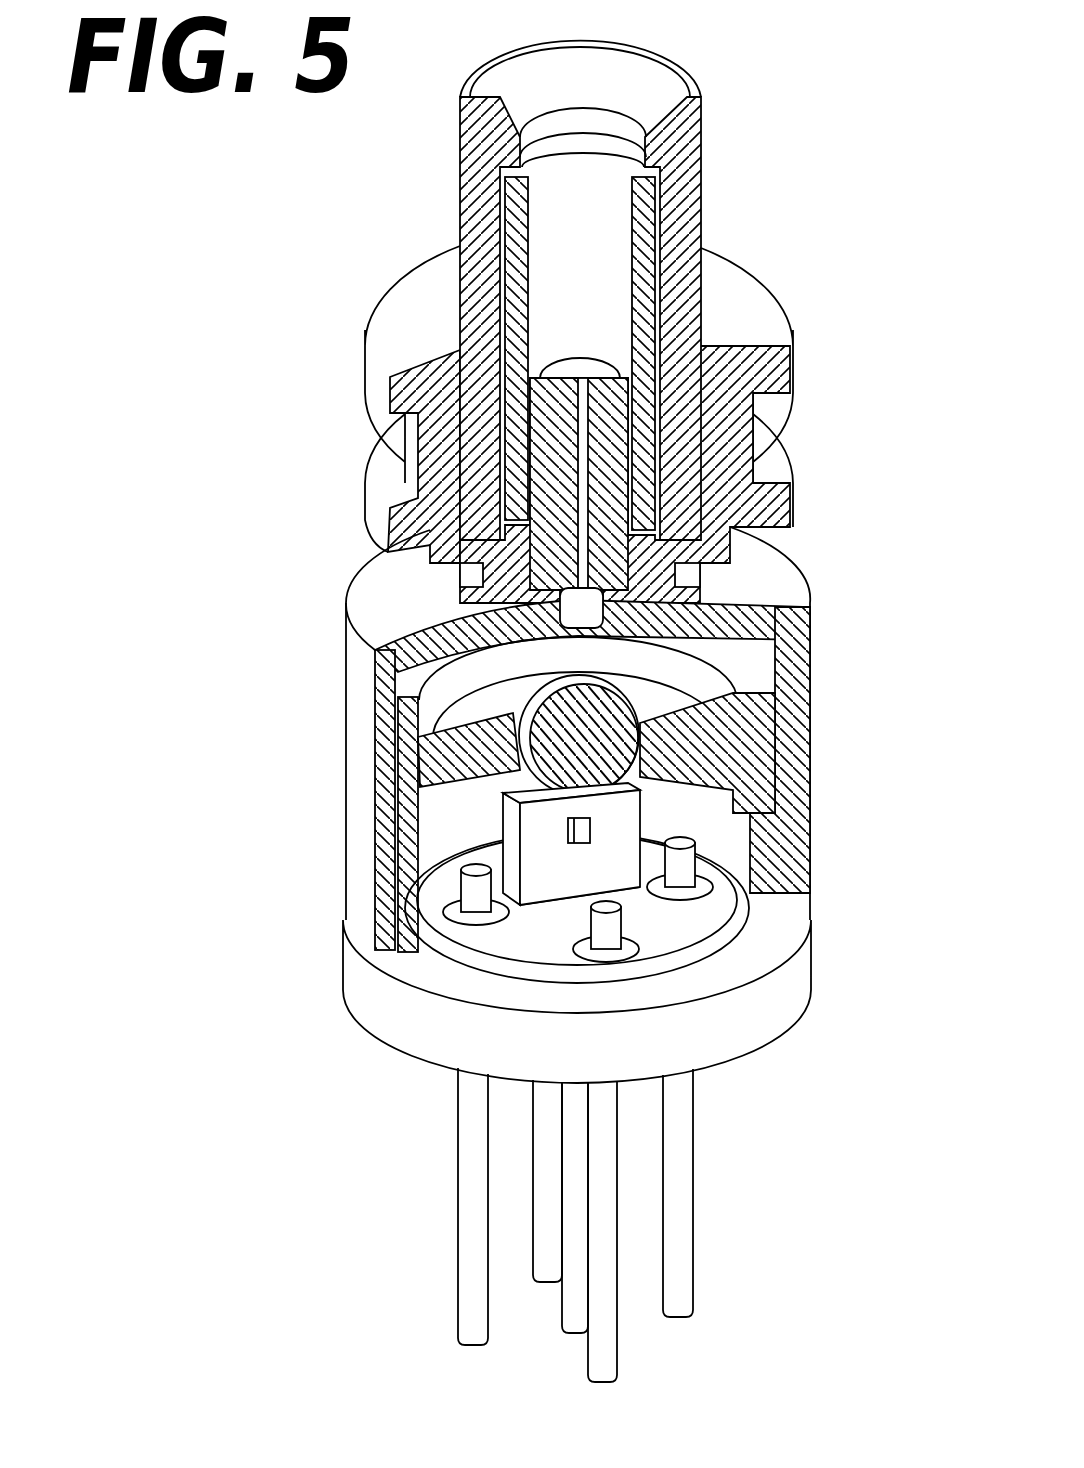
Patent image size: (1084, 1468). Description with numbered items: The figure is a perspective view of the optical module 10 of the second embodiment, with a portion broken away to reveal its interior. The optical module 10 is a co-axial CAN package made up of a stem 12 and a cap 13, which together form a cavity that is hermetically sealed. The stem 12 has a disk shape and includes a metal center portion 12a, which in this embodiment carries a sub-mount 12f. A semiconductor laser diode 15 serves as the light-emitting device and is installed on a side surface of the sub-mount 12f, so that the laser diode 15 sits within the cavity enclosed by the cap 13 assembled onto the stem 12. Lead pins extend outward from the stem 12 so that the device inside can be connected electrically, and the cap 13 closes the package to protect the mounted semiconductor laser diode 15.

The optical module 10 is at (262, 697).
The stem 12 is at (400, 1032).
The center portion 12a is at (677, 938).
The sub-mount 12f is at (640, 888).
The cap 13 is at (803, 848).
The semiconductor laser diode 15 is at (518, 819).